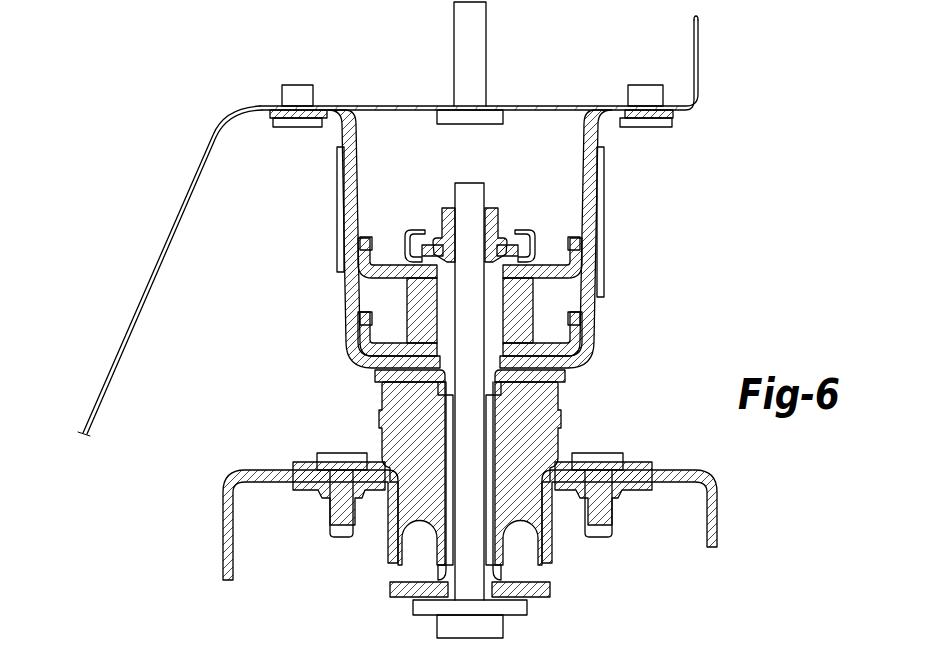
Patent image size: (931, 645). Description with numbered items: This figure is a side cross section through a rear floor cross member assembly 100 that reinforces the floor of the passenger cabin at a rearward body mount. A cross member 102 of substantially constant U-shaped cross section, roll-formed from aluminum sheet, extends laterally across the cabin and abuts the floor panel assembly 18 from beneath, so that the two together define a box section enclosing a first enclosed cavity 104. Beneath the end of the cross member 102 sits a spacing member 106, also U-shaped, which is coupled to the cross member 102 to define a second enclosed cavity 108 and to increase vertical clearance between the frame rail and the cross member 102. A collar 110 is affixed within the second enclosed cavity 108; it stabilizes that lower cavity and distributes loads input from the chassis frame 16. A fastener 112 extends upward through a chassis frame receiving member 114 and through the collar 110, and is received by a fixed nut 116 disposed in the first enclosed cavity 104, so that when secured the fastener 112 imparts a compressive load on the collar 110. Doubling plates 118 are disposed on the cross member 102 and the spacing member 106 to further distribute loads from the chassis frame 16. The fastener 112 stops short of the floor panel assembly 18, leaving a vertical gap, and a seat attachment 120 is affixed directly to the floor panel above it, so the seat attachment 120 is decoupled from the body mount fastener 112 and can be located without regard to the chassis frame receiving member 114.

The chassis frame 16 is at (675, 468).
The floor panel assembly 18 is at (168, 233).
The rear floor cross member assembly 100 is at (656, 187).
The cross member 102 is at (339, 122).
The first enclosed cavity 104 is at (402, 118).
The spacing member 106 is at (343, 270).
The second enclosed cavity 108 is at (563, 298).
The collar 110 is at (533, 332).
The fastener 112 is at (487, 188).
The chassis frame receiving member 114 is at (373, 375).
The fixed nut 116 is at (498, 222).
The doubling plate 118 is at (365, 232).
The seat attachment 120 is at (454, 33).